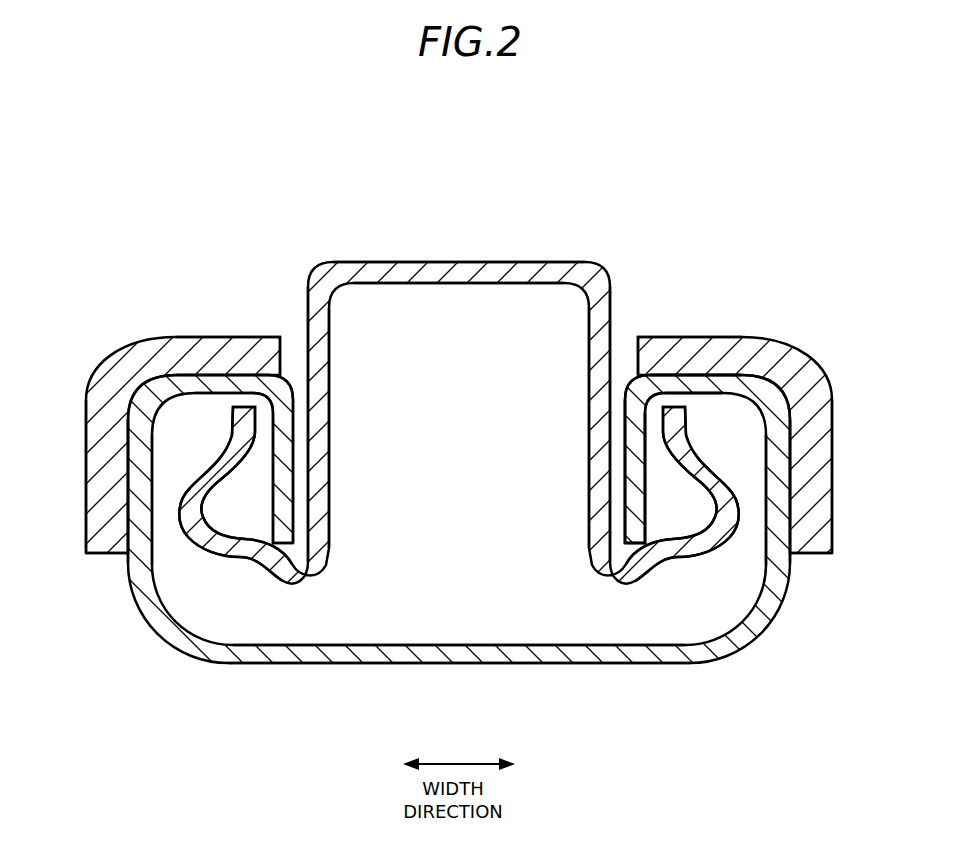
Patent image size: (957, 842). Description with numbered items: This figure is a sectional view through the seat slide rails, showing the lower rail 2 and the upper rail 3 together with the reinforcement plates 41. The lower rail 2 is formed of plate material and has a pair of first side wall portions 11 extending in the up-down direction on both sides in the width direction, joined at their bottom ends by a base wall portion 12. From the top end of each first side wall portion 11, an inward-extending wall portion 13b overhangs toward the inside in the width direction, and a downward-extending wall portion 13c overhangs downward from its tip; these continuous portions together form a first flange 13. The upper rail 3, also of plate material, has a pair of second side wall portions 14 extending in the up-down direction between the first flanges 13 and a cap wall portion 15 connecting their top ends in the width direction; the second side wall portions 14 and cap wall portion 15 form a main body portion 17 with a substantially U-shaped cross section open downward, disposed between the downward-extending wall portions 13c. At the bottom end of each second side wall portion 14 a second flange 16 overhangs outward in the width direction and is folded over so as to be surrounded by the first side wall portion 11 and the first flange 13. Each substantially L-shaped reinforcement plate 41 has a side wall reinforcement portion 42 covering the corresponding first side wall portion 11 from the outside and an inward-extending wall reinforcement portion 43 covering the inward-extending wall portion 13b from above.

The lower rail 2 is at (625, 676).
The upper rail 3 is at (520, 258).
The first side wall portion 11 is at (123, 494).
The base wall portion 12 is at (503, 664).
The first flange 13 is at (213, 372).
The inward-extending wall portion 13b is at (687, 380).
The downward-extending wall portion 13c is at (627, 460).
The second side wall portion 14 is at (308, 320).
The cap wall portion 15 is at (460, 261).
The second flange 16 is at (208, 462).
The main body portion 17 is at (395, 267).
The reinforcement plate 41 is at (137, 333).
The side wall reinforcement portion 42 is at (91, 479).
The inward-extending wall reinforcement portion 43 is at (247, 340).